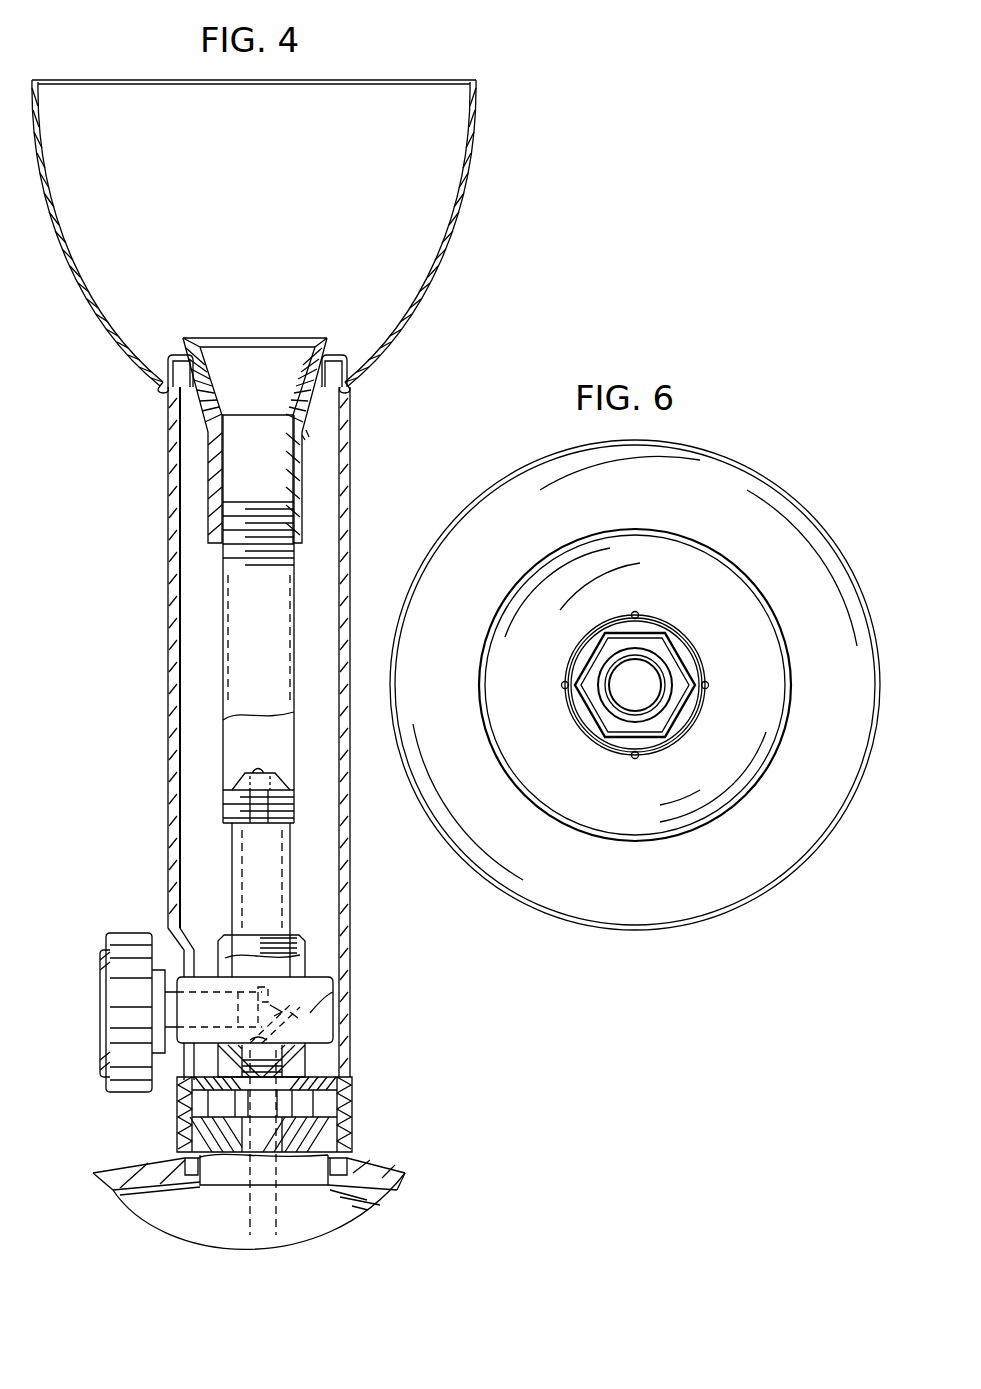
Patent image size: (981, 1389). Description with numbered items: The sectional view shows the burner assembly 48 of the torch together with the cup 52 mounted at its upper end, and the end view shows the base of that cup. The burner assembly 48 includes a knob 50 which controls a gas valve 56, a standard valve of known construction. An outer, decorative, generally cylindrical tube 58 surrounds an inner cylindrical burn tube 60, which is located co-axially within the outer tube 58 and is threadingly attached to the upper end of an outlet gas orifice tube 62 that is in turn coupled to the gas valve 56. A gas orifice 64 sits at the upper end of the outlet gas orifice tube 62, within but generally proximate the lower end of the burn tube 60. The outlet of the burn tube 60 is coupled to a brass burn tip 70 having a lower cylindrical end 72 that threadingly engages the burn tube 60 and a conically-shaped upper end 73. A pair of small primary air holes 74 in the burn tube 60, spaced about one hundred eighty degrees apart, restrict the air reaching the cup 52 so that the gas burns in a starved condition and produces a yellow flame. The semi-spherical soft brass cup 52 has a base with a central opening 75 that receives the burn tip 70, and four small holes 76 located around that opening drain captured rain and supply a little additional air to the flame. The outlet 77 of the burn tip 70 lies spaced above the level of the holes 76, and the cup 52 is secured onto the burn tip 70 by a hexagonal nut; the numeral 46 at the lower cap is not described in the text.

In FIG. 4, the base cap 46 is at (93, 1175).
In FIG. 4, the burner assembly 48 is at (170, 439).
In FIG. 4, the knob 50 is at (104, 1005).
In FIG. 4, the cup 52 is at (480, 148).
In FIG. 6, the cup 52 is at (778, 483).
In FIG. 4, the gas valve 56 is at (313, 1005).
In FIG. 4, the outer tube 58 is at (168, 562).
In FIG. 4, the burn tube 60 is at (223, 635).
In FIG. 4, the outlet gas orifice tube 62 is at (230, 882).
In FIG. 4, the gas orifice 64 is at (262, 786).
In FIG. 4, the burn tip 70 is at (303, 456).
In FIG. 4, the lower cylindrical end 72 is at (208, 468).
In FIG. 4, the conically-shaped upper end 73 is at (318, 400).
In FIG. 4, the primary air holes 74 is at (258, 770).
In FIG. 4, the central opening 75 is at (327, 342).
In FIG. 6, the central opening 75 is at (648, 672).
In FIG. 4, the small holes 76 is at (163, 388).
In FIG. 6, the small holes 76 is at (635, 611).
In FIG. 4, the outlet 77 is at (193, 338).